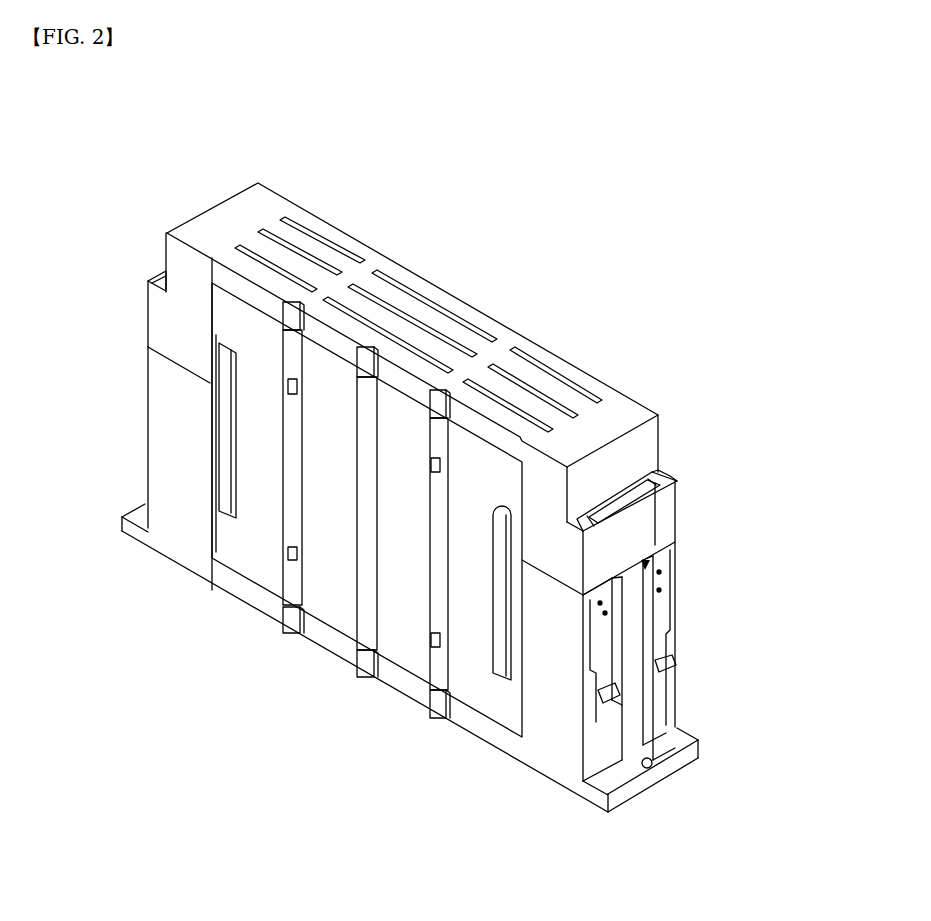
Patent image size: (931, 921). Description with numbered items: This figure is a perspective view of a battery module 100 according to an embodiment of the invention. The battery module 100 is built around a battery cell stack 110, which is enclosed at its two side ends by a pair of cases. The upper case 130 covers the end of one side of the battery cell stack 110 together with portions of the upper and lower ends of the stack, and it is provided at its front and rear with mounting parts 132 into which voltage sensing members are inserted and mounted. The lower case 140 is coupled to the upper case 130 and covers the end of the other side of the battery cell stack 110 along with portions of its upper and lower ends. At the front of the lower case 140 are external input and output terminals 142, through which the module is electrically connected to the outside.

The battery module 100 is at (90, 178).
The battery cell stack 110 is at (256, 565).
The upper case 130 is at (144, 307).
The mounting parts 132 is at (637, 520).
The lower case 140 is at (144, 455).
The external input and output terminals 142 is at (678, 670).